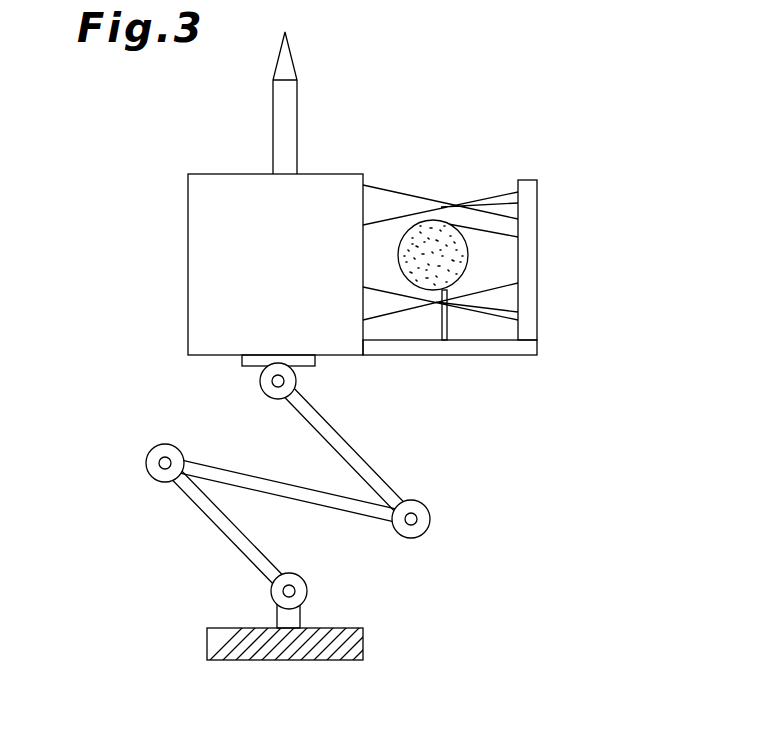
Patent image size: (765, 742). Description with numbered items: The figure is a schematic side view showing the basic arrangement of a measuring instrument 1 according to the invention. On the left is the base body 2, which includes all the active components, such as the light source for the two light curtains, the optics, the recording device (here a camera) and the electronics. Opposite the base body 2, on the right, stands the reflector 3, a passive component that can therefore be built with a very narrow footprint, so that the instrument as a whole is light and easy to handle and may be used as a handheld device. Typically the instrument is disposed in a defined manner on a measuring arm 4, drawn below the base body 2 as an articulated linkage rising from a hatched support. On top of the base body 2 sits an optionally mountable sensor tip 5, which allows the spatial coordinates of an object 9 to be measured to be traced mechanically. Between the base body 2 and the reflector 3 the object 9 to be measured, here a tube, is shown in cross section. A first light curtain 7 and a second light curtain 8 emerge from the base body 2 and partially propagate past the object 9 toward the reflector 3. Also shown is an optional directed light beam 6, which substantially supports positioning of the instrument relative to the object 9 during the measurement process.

The measuring instrument 1 is at (494, 93).
The base body 2 is at (210, 312).
The reflector 3 is at (527, 247).
The measuring arm 4 is at (385, 485).
The sensor tip 5 is at (287, 55).
The directed light beam 6 is at (448, 317).
The first light curtain 7 is at (393, 198).
The second light curtain 8 is at (382, 307).
The object to be measured 9 is at (442, 242).